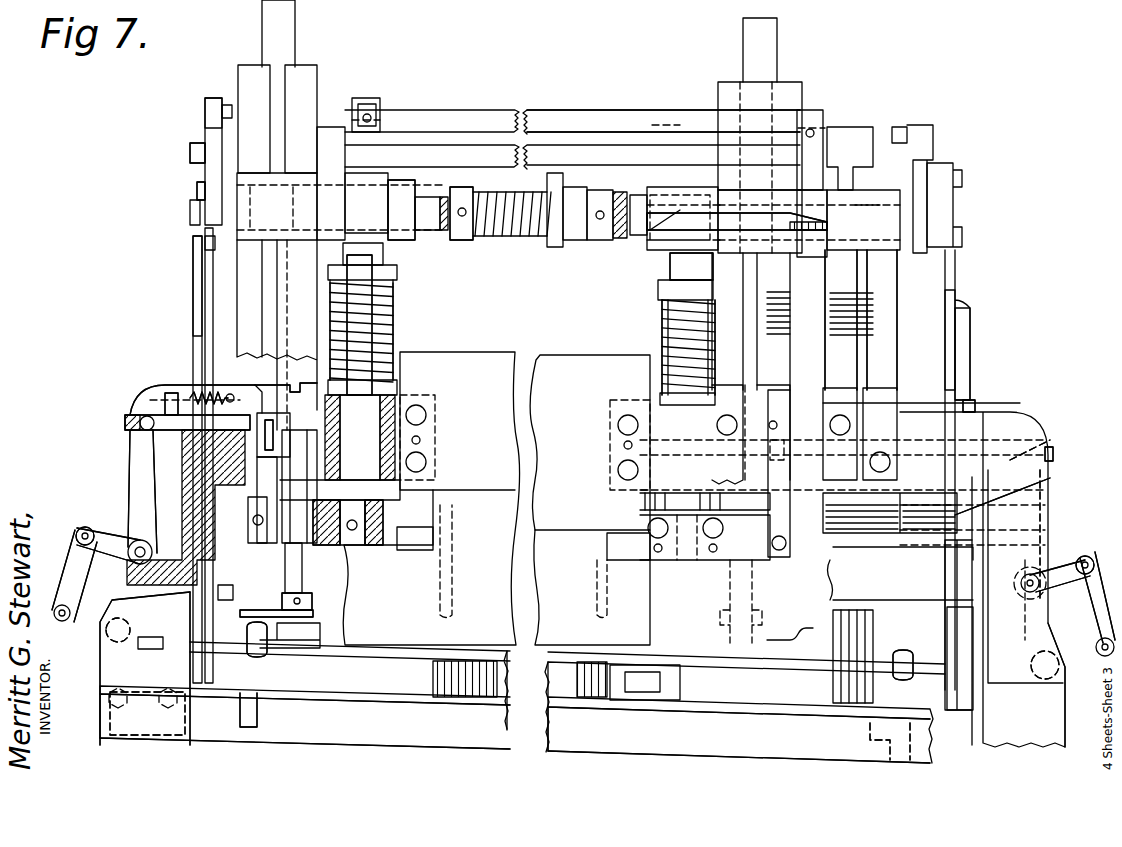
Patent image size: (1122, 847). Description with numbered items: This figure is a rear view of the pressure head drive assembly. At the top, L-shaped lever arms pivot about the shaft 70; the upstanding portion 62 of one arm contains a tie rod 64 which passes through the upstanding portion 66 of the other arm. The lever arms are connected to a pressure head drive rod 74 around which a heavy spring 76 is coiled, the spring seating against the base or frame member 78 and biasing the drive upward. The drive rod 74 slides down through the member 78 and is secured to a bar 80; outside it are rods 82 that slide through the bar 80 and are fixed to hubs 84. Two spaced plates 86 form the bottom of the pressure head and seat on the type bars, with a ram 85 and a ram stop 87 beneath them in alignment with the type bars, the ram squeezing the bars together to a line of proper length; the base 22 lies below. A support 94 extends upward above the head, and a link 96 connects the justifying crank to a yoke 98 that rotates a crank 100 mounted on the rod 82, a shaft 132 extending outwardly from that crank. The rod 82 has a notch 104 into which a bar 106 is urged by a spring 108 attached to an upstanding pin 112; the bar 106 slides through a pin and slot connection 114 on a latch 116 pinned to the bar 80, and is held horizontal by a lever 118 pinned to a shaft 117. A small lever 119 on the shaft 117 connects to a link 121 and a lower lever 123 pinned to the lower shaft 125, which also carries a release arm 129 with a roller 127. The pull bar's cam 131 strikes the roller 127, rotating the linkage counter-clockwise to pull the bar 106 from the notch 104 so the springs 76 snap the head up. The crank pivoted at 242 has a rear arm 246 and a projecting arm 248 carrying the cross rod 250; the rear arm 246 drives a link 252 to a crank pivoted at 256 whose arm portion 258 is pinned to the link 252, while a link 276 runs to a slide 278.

The base 22 is at (558, 725).
The upstanding portion 62 is at (808, 152).
The tie rod 64 is at (700, 118).
The upstanding portion 66 is at (375, 130).
The shaft 70 is at (440, 233).
The pressure head drive rod 74 is at (372, 320).
The heavy spring 76 is at (390, 343).
The base or frame member 78 is at (158, 410).
The bar 80 is at (312, 545).
The rod 82 is at (302, 588).
The hub 84 is at (282, 607).
The ram 85 is at (390, 692).
The spaced plates 86 is at (537, 683).
The ram stop 87 is at (617, 695).
The support 94 is at (855, 338).
The link 96 is at (885, 133).
The yoke 98 is at (785, 235).
The crank 100 is at (662, 250).
The notch 104 is at (290, 408).
The bar 106 is at (160, 423).
The spring 108 is at (194, 395).
The upstanding pin 112 is at (164, 393).
The pin and slot connection 114 is at (240, 395).
The latch 116 is at (265, 540).
The shaft 117 is at (128, 544).
The lever 118 is at (140, 488).
The small lever 119 is at (80, 555).
The link 121 is at (70, 592).
The lower lever 123 is at (118, 642).
The lower shaft 125 is at (112, 650).
The roller 127 is at (257, 655).
The release arm 129 is at (105, 745).
The cam 131 is at (252, 727).
The shaft 132 is at (395, 182).
The pivot 242 is at (198, 190).
The rear arm 246 is at (205, 160).
The projecting arm 248 is at (212, 131).
The rod 250 is at (232, 103).
The link 252 is at (212, 248).
The pivot 256 is at (1040, 505).
The arm portion 258 is at (1050, 480).
The link 276 is at (198, 238).
The slide 278 is at (973, 404).